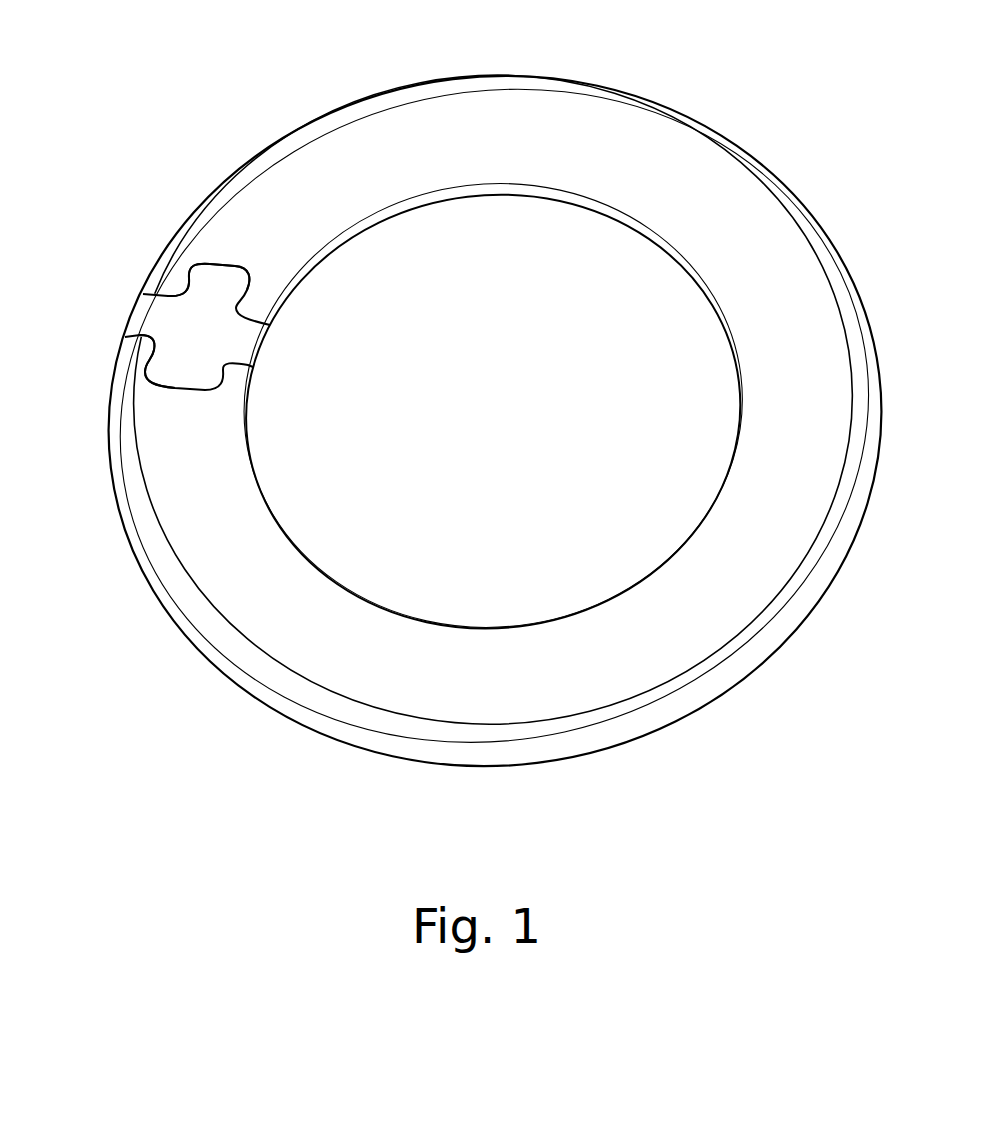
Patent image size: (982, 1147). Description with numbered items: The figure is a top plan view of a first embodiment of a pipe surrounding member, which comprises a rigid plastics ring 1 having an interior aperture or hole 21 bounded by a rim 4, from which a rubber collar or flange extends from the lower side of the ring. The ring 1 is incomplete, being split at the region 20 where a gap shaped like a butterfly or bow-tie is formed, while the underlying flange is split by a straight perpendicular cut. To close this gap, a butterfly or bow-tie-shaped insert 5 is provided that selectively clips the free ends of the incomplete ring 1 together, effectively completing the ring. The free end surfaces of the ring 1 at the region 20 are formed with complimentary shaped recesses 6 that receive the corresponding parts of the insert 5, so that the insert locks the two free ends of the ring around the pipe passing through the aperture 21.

The rigid plastics ring 1 is at (667, 147).
The rim 4 is at (411, 207).
The butterfly or bow-tie-shaped insert 5 is at (173, 360).
The complimentary shaped recesses 6 is at (165, 296).
The region 20 is at (290, 359).
The interior aperture or hole 21 is at (518, 419).